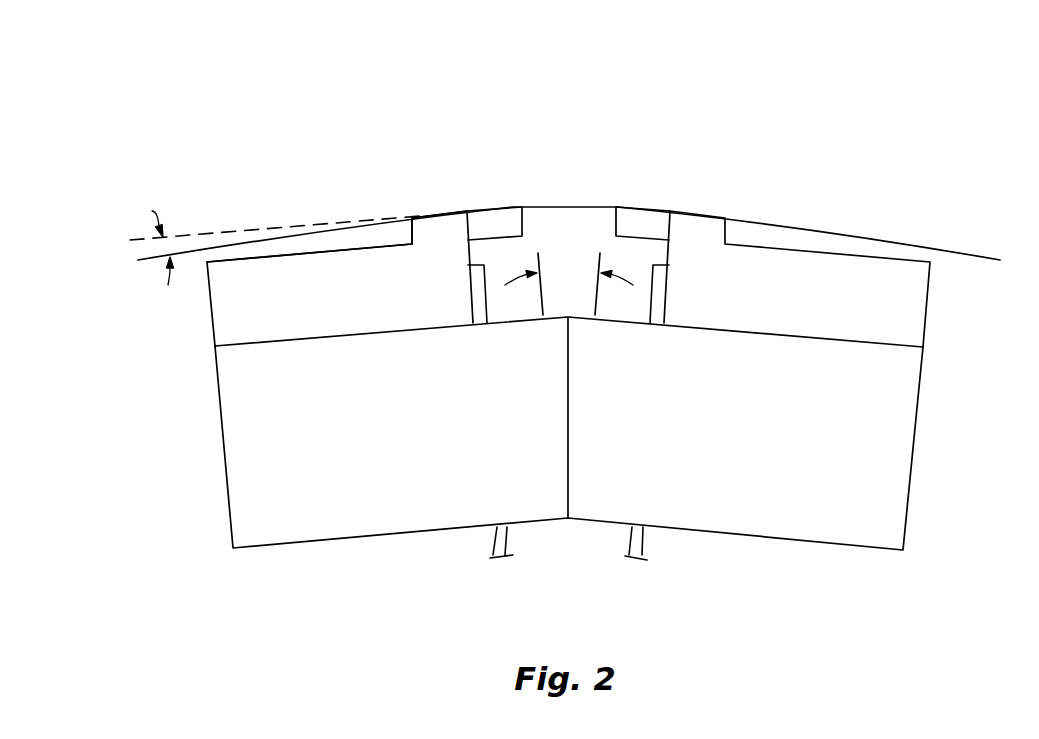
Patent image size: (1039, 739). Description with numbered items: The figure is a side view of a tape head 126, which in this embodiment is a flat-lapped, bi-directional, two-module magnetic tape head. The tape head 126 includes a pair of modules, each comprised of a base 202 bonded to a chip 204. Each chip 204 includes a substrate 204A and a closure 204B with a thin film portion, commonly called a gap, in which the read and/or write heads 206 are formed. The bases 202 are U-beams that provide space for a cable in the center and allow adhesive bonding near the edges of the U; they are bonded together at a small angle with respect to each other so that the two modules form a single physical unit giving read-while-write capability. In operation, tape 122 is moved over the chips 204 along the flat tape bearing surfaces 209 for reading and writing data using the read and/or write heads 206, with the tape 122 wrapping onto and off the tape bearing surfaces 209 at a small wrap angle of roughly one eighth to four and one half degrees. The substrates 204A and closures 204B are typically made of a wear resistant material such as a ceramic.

The tape head 126 is at (272, 173).
The tape 122 is at (833, 233).
The base 202 is at (221, 422).
The chip 204 is at (212, 312).
The substrate 204A is at (277, 287).
The closure 204B is at (617, 226).
The read and/or write heads 206 is at (475, 197).
The tape bearing surfaces 209 is at (414, 203).